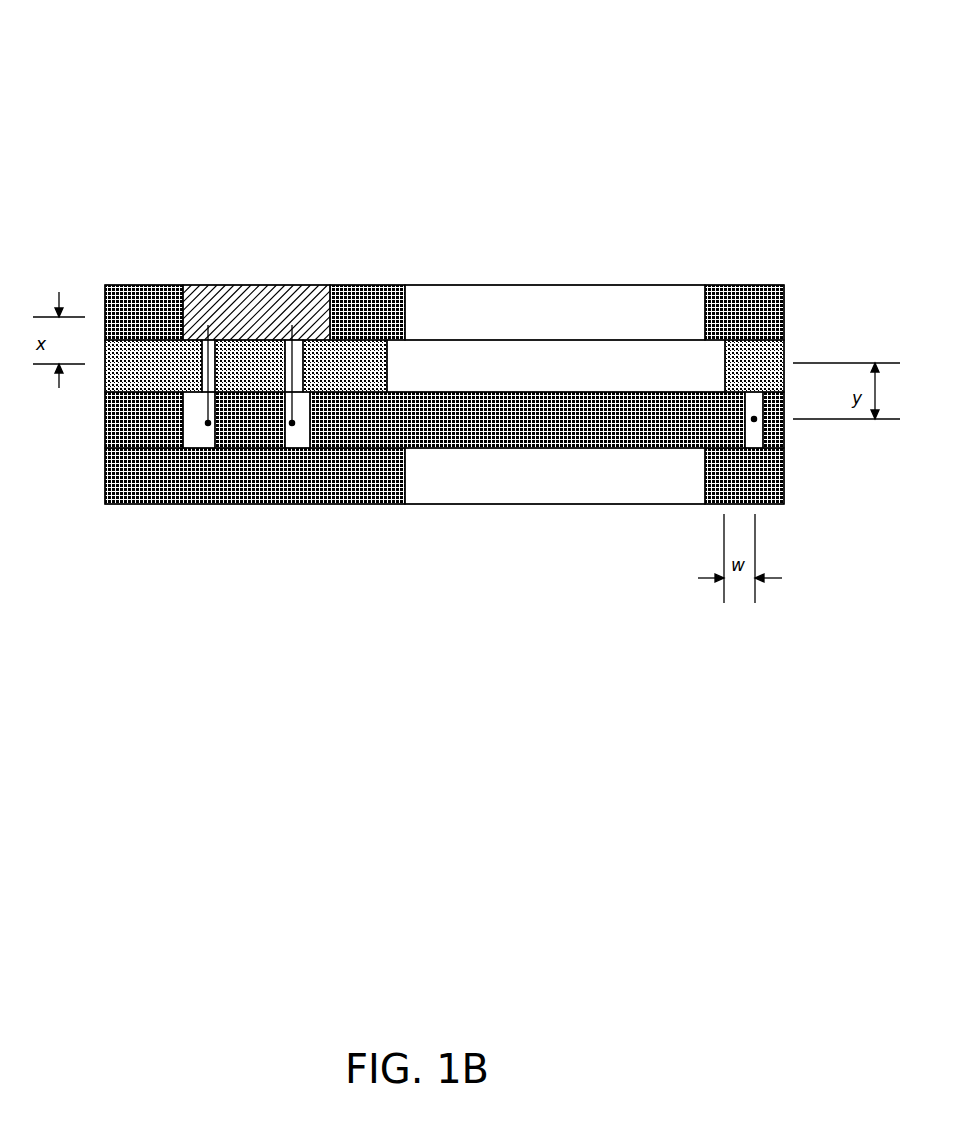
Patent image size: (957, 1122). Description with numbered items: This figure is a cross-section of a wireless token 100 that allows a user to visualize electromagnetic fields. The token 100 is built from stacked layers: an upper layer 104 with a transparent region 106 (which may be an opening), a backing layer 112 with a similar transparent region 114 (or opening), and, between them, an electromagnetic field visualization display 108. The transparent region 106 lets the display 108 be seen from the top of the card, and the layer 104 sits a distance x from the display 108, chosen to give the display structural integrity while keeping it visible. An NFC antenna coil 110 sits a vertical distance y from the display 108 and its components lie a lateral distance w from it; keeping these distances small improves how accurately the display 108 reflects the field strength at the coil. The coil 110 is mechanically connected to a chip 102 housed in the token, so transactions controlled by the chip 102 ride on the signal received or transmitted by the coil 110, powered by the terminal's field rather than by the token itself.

The token 100 is at (22, 42).
The chip 102 is at (273, 318).
The layer 104 is at (388, 297).
The transparent region 106 is at (517, 308).
The electromagnetic field visualization display 108 is at (593, 373).
The NFC antenna coil 110 is at (208, 423).
The backing layer 112 is at (218, 473).
The transparent region 114 is at (566, 475).